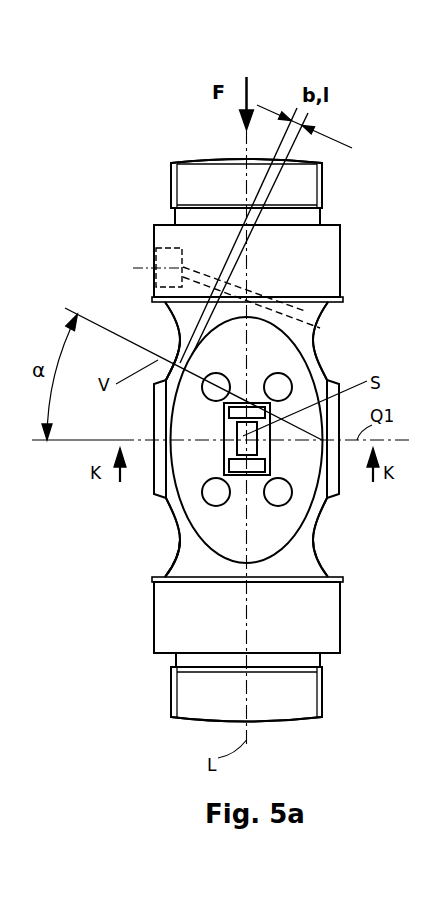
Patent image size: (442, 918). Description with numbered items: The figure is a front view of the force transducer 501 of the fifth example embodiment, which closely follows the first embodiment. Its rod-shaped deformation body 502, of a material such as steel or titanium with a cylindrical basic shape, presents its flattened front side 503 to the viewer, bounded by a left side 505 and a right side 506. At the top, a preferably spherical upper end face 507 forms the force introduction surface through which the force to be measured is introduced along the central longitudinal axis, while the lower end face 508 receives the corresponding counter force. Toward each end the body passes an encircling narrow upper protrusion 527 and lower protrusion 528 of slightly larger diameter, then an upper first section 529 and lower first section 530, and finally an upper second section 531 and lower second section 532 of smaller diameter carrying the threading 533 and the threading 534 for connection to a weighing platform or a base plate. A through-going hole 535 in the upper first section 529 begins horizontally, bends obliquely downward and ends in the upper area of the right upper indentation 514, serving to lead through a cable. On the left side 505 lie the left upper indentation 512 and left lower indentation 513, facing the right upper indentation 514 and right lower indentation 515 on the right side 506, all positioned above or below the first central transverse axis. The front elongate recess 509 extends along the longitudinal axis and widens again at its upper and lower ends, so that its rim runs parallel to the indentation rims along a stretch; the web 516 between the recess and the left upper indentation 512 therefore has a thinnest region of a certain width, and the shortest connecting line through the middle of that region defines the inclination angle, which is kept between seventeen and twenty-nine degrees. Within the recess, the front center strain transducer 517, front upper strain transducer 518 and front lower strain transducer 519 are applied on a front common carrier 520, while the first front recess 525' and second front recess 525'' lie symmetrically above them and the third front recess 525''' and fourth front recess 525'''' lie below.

The force transducer 501 is at (62, 122).
The deformation body 502 is at (192, 558).
The front side 503 is at (177, 618).
The left side 505 is at (155, 480).
The right side 506 is at (340, 470).
The upper end face 507 is at (222, 156).
The lower end face 508 is at (273, 727).
The front elongate recess 509 is at (310, 540).
The left upper indentation 512 is at (173, 366).
The left lower indentation 513 is at (180, 548).
The right upper indentation 514 is at (320, 350).
The right lower indentation 515 is at (340, 578).
The web 516 is at (170, 380).
The front center strain transducer 517 is at (243, 446).
The front upper strain transducer 518 is at (232, 410).
The front lower strain transducer 519 is at (191, 523).
The front common carrier 520 is at (266, 464).
The first front recess 525' is at (220, 373).
The second front recess 525'' is at (272, 373).
The third front recess 525''' is at (217, 507).
The fourth front recess 525'''' is at (275, 507).
The upper protrusion 527 is at (343, 297).
The lower protrusion 528 is at (340, 598).
The upper first section 529 is at (318, 268).
The lower first section 530 is at (328, 645).
The upper second section 531 is at (300, 190).
The lower second section 532 is at (305, 700).
The threading 533 is at (322, 176).
The threading 534 is at (173, 700).
The through-going hole 535 is at (158, 258).